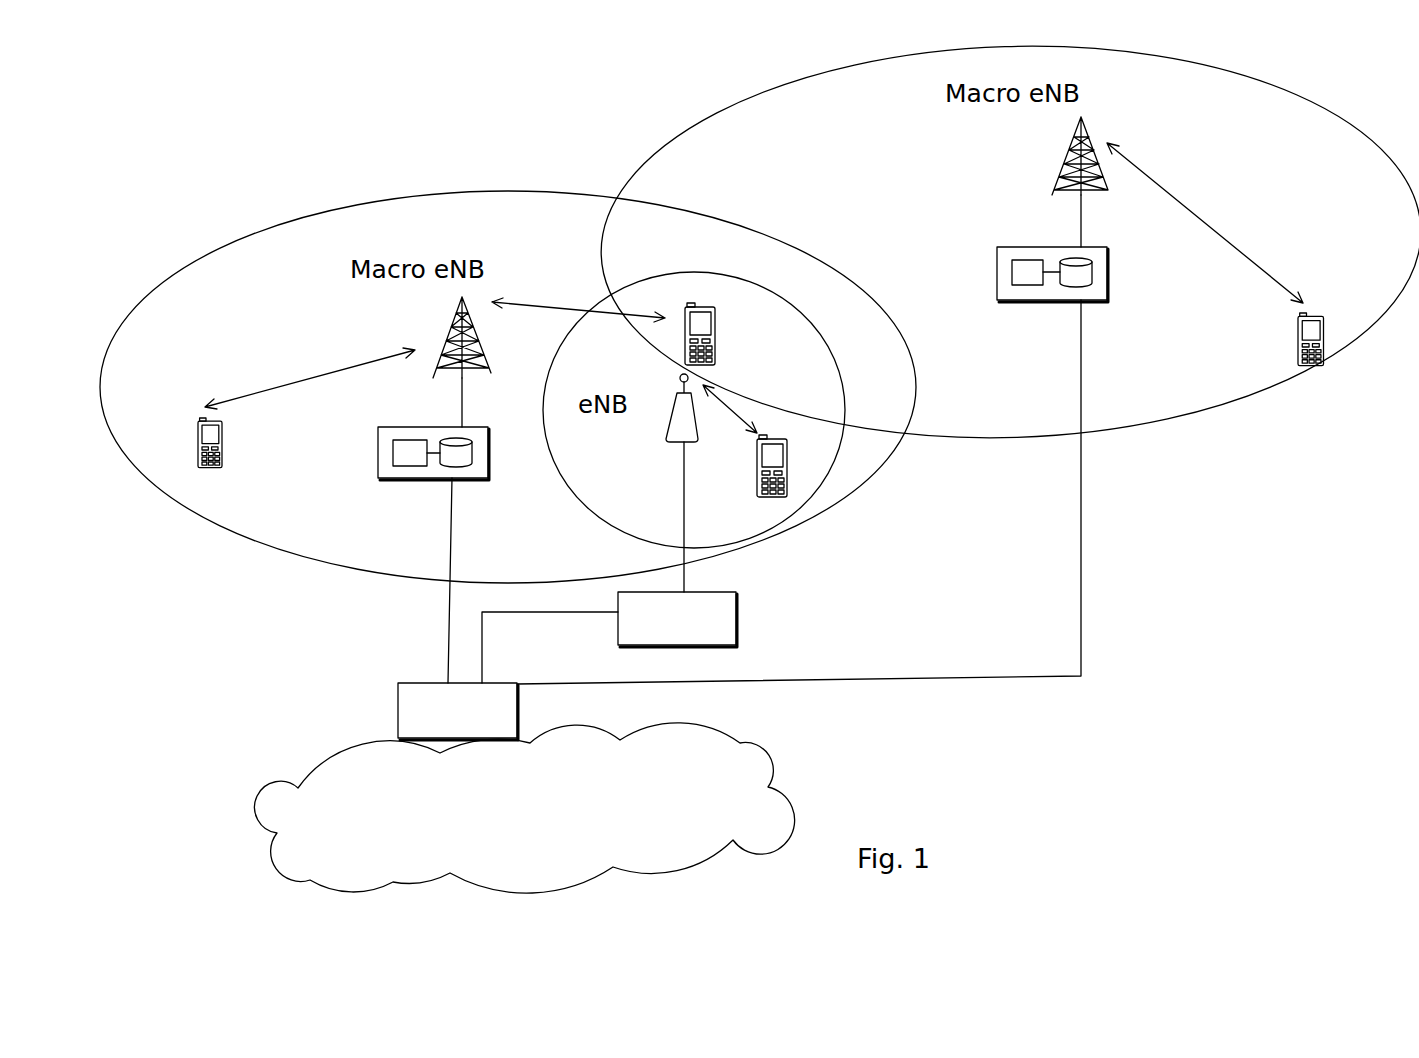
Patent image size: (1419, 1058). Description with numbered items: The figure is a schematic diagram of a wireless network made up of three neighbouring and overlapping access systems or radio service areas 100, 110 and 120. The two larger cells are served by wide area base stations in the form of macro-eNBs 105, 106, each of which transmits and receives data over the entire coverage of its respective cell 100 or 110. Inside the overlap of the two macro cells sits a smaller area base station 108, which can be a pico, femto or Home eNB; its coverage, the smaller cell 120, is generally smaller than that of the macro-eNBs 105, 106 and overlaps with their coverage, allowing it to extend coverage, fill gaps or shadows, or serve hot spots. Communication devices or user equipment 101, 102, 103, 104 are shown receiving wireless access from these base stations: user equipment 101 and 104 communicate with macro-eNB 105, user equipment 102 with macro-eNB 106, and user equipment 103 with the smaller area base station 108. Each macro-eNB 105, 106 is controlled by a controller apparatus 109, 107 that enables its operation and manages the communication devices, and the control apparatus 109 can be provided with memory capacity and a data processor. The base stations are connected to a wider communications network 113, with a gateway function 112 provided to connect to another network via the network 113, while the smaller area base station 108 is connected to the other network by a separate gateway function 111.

The radio service area 100 is at (185, 222).
The radio service area 110 is at (676, 122).
The radio service area 120 is at (845, 358).
The user equipment 101 is at (198, 468).
The user equipment 102 is at (1298, 368).
The user equipment 103 is at (787, 493).
The user equipment 104 is at (687, 307).
The macro-eNB 105 is at (443, 343).
The macro-eNB 106 is at (1065, 162).
The controller apparatus 107 is at (995, 247).
The smaller area base station 108 is at (663, 435).
The controller apparatus 109 is at (377, 427).
The separate gateway function 111 is at (737, 613).
The gateway function 112 is at (393, 703).
The wider communications network 113 is at (332, 770).